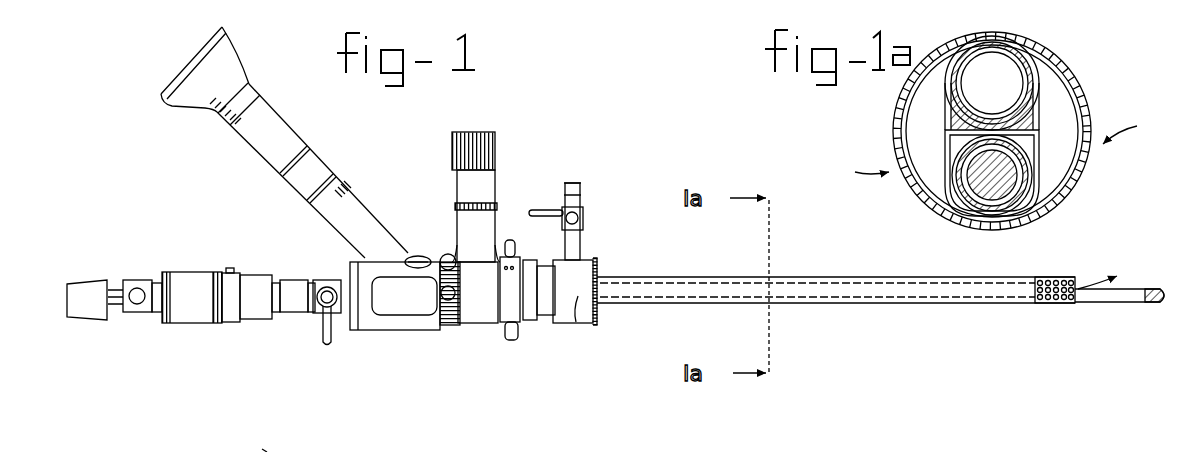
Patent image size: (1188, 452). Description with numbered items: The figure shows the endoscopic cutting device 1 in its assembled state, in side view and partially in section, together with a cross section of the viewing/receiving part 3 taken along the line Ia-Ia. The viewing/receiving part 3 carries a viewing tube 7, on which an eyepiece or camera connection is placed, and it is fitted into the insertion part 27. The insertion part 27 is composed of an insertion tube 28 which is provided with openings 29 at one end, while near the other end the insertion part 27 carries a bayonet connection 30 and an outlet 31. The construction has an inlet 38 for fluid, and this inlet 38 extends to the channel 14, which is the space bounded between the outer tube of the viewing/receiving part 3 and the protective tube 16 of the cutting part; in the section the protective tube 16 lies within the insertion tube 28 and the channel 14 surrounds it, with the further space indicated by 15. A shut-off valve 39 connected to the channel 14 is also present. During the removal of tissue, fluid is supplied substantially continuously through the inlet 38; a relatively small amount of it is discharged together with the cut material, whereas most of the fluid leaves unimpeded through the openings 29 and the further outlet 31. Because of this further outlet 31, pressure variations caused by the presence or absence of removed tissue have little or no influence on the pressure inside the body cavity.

In FIG. 1, the endoscopic cutting device 1 is at (549, 156).
In FIG. 1, the viewing/receiving part 3 is at (264, 451).
In FIG. 1, the viewing tube 7 is at (347, 208).
In FIG. 1a, the channel 14 is at (958, 143).
In FIG. 1a, the annular space / channel 15 is at (1058, 172).
In FIG. 1a, the protective tube 16 is at (975, 229).
In FIG. 1, the insertion part 27 is at (646, 348).
In FIG. 1a, the insertion tube 28 is at (1087, 172).
In FIG. 1, the openings 29 is at (1033, 330).
In FIG. 1a, the openings 29 is at (893, 158).
In FIG. 1, the bayonet connection 30 is at (578, 302).
In FIG. 1, the outlet 31 is at (582, 191).
In FIG. 1, the inlet 38 is at (424, 257).
In FIG. 1, the shut-off valve 39 is at (331, 338).